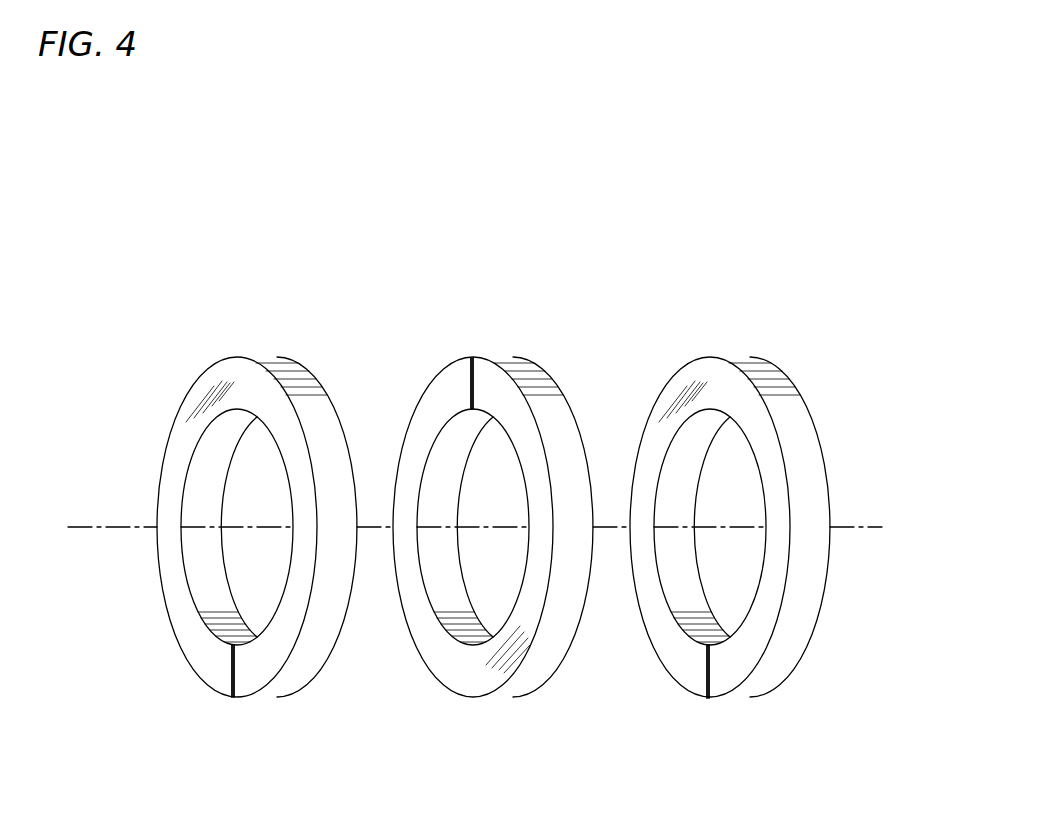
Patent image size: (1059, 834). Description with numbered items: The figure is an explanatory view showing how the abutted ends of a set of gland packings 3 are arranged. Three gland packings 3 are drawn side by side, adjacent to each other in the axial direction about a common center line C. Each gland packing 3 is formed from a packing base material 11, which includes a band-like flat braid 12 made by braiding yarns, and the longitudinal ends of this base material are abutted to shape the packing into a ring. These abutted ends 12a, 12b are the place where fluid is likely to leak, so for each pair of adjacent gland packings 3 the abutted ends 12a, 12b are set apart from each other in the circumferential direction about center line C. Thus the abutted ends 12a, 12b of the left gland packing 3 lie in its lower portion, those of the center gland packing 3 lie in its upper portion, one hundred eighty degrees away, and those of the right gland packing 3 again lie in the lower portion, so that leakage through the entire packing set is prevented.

The gland packing 3 is at (209, 347).
The packing base material 11 is at (188, 630).
The flat braid 12 is at (308, 388).
The abutted end 12a is at (223, 678).
The abutted end 12b is at (242, 680).
The center line C is at (110, 527).